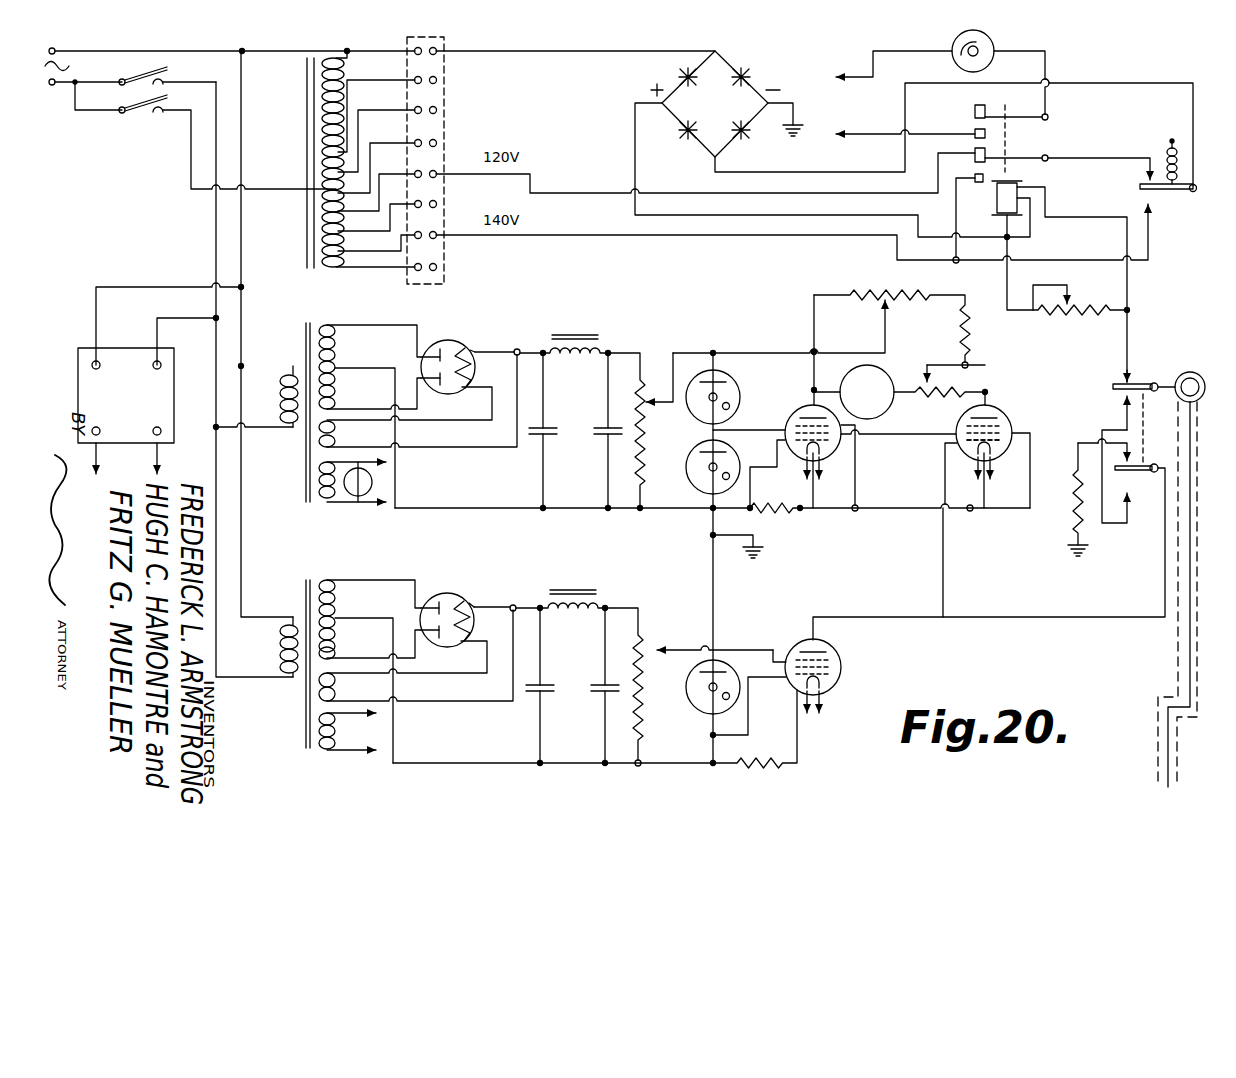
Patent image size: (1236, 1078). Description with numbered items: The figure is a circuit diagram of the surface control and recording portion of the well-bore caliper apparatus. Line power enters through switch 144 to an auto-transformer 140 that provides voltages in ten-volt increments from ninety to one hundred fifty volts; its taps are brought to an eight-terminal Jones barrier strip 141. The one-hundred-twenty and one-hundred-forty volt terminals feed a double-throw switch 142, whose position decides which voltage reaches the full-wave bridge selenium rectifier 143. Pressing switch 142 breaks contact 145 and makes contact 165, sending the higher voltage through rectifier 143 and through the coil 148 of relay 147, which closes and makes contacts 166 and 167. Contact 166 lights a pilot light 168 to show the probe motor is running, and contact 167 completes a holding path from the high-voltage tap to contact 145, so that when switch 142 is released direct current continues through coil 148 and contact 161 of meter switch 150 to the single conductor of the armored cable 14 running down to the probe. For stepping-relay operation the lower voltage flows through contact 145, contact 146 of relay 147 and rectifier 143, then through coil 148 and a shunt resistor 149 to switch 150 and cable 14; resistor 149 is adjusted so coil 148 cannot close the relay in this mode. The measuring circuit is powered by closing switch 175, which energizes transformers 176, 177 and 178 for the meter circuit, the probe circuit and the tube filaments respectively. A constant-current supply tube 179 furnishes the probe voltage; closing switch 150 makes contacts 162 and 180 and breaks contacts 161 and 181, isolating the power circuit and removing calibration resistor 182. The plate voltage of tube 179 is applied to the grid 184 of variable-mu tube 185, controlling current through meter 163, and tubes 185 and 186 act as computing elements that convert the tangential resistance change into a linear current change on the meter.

The armored cable 14 is at (1155, 732).
The auto-transformer 140 is at (326, 57).
The 8-terminal Jones barrier strip 141 is at (444, 130).
The double-throw switch 142 is at (1163, 191).
The full-wave bridge selenium rectifier 143 is at (730, 68).
The switch 144 is at (145, 116).
The contact 145 is at (1146, 178).
The contact 146 is at (974, 152).
The relay 147 is at (1016, 147).
The coil 148 is at (1010, 205).
The shunt resistor 149 is at (1090, 318).
The meter switch 150 is at (1137, 380).
The contact 161 is at (1122, 382).
The contact 162 is at (1112, 418).
The meter 163 is at (878, 412).
The contact 165 is at (1145, 203).
The contact 166 is at (977, 131).
The contact 167 is at (982, 186).
The pilot light 168 is at (988, 47).
The switch 175 is at (146, 83).
The transformer 176 is at (320, 327).
The transformer 177 is at (318, 583).
The transformer 178 is at (143, 404).
The constant-current supply tube 179 is at (840, 656).
The contact 180 is at (1131, 490).
The contact 181 is at (1134, 458).
The calibration resistor 182 is at (1078, 517).
The grid 184 is at (960, 442).
The variable-mu tube 185 is at (1002, 419).
The variable-mu tube 186 is at (796, 411).